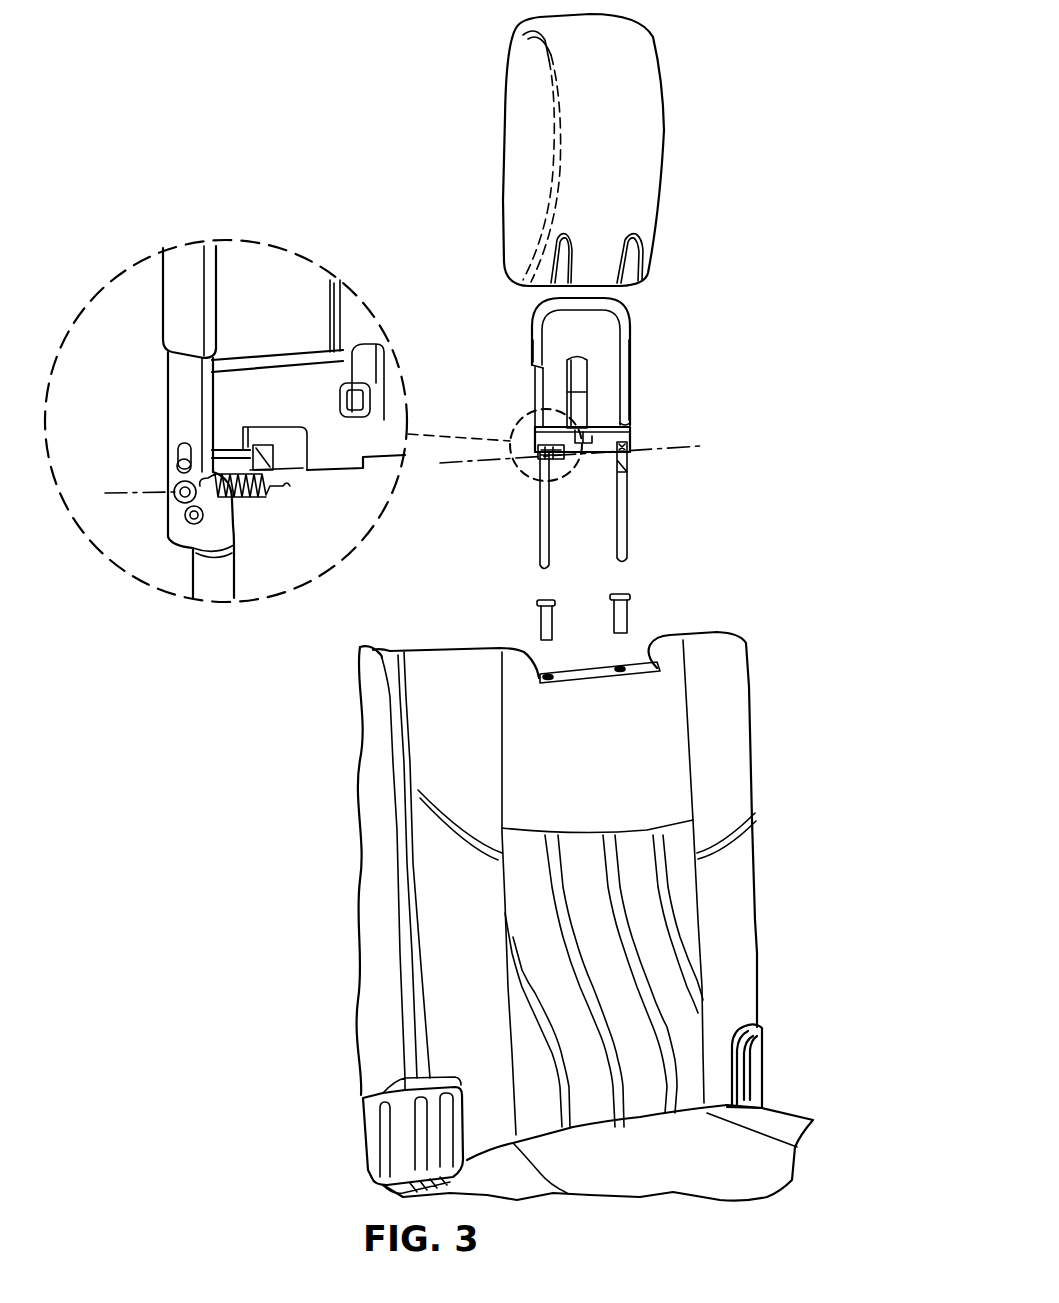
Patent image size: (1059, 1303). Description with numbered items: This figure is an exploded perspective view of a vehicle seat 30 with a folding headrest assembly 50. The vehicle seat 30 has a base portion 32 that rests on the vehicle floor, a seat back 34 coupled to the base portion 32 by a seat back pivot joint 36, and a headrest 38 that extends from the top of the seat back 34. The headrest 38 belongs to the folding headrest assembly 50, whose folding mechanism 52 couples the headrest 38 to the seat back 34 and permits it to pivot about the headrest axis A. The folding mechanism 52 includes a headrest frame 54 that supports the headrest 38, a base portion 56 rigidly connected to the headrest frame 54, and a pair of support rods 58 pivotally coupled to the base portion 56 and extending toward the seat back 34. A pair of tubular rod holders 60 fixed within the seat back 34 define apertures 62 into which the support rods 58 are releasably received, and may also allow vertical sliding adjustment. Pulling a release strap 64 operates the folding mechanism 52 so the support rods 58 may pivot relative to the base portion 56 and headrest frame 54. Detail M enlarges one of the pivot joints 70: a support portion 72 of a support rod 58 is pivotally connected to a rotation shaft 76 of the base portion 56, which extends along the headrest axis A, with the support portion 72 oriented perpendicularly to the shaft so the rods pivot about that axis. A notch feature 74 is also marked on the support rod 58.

The vehicle seat 30 is at (566, 150).
The base portion 32 is at (693, 1162).
The seat back 34 is at (713, 718).
The seat back pivot joint 36 is at (755, 1058).
The headrest 38 is at (627, 58).
The folding headrest assembly 50 is at (450, 338).
The folding mechanism 52 is at (626, 305).
The headrest frame 54 is at (625, 327).
The base portion 56 is at (632, 437).
The support rods 58 is at (622, 532).
The tubular rod holders 60 is at (623, 612).
The apertures 62 is at (625, 583).
The release strap 64 is at (580, 370).
The pivot joints 70 is at (212, 506).
The support portions 72 is at (186, 519).
The notch 74 is at (620, 488).
The rotation shaft 76 is at (174, 495).
The headrest axis A is at (416, 459).
The detail M is at (225, 411).